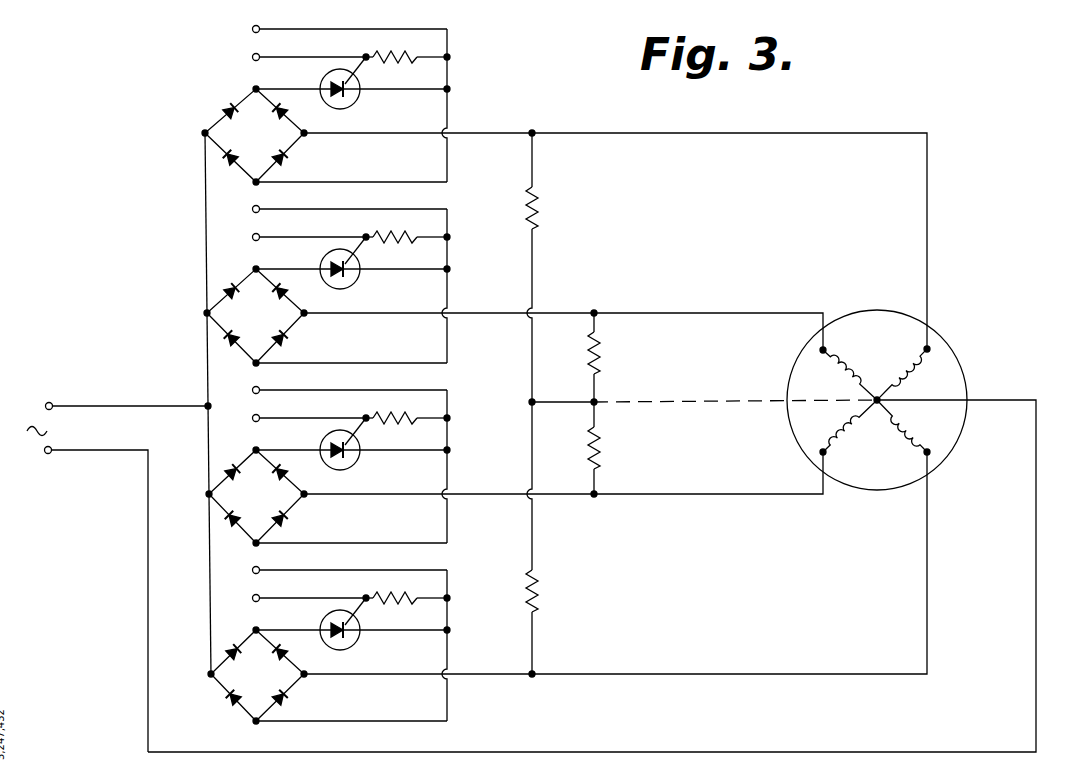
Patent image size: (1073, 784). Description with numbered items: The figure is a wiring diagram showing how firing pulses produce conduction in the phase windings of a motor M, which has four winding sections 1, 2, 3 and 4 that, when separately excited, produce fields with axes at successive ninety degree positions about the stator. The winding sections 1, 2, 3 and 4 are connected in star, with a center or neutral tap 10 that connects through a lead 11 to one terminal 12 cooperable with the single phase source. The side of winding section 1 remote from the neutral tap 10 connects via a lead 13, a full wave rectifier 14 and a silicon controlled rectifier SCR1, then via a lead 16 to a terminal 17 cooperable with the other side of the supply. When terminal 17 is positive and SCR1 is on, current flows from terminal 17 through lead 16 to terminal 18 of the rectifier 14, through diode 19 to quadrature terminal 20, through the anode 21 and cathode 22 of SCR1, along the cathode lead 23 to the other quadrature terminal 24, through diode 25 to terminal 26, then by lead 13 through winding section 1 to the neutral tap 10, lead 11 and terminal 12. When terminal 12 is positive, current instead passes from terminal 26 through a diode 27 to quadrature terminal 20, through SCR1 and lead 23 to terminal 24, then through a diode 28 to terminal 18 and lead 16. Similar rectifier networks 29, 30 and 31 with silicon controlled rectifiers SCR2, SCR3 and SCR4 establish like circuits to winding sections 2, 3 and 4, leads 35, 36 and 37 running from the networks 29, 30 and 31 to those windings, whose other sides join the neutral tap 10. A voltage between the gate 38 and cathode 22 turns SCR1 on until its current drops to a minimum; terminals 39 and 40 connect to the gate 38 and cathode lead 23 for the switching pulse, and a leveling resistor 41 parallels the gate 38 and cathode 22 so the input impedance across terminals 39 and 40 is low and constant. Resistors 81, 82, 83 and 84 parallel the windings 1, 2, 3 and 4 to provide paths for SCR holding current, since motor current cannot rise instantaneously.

The terminal 40 is at (253, 29).
The terminal 39 is at (253, 57).
The leveling resistor 41 is at (408, 50).
The gate 38 is at (348, 72).
The cathode 22 is at (356, 83).
The anode 21 is at (327, 103).
The quadrature terminal 20 is at (258, 87).
The diode 19 is at (224, 108).
The terminal 18 is at (203, 134).
The full wave rectifier 14 is at (257, 132).
The diode 27 is at (286, 107).
The terminal 26 is at (306, 135).
The diode 25 is at (286, 160).
The quadrature terminal 24 is at (256, 186).
The diode 28 is at (222, 160).
The cathode lead 23 is at (381, 182).
The lead 16 is at (207, 265).
The lead 13 is at (480, 133).
The rectifier network 29 is at (264, 322).
The rectifier network 30 is at (264, 503).
The rectifier network 31 is at (264, 683).
The lead 35 is at (498, 313).
The lead 36 is at (500, 494).
The lead 37 is at (501, 674).
The resistor 81 is at (540, 210).
The resistor 82 is at (604, 354).
The resistor 83 is at (604, 449).
The resistor 84 is at (540, 593).
The terminal 17 is at (48, 403).
The terminal 12 is at (46, 453).
The lead 11 is at (1036, 549).
The motor M is at (891, 400).
The winding section 1 is at (898, 370).
The winding section 2 is at (840, 378).
The winding section 3 is at (843, 436).
The winding section 4 is at (907, 430).
The neutral tap 10 is at (871, 408).
The silicon controlled rectifier SCR1 is at (360, 91).
The silicon controlled rectifier SCR2 is at (357, 278).
The silicon controlled rectifier SCR3 is at (357, 459).
The silicon controlled rectifier SCR4 is at (357, 639).